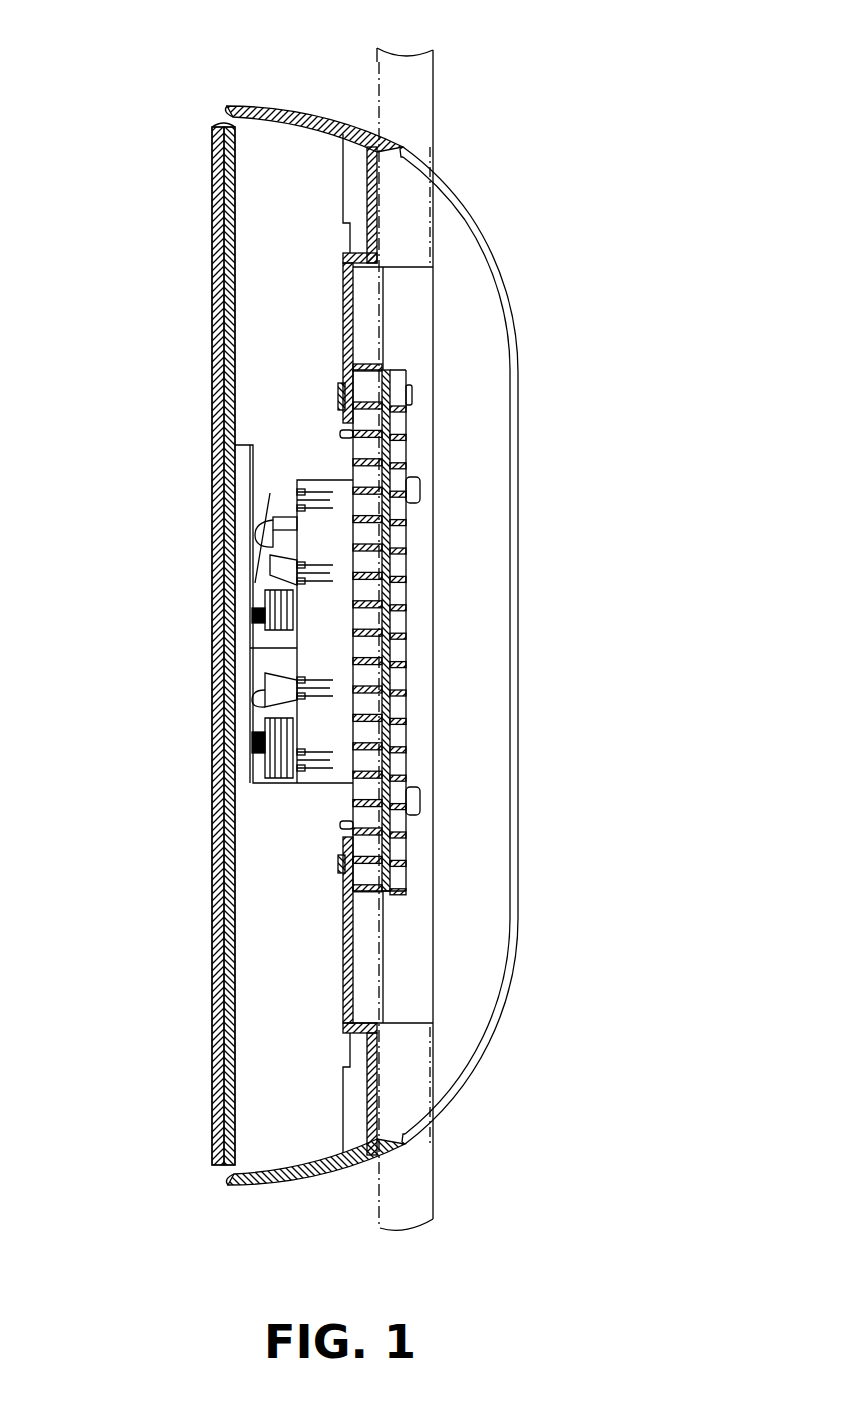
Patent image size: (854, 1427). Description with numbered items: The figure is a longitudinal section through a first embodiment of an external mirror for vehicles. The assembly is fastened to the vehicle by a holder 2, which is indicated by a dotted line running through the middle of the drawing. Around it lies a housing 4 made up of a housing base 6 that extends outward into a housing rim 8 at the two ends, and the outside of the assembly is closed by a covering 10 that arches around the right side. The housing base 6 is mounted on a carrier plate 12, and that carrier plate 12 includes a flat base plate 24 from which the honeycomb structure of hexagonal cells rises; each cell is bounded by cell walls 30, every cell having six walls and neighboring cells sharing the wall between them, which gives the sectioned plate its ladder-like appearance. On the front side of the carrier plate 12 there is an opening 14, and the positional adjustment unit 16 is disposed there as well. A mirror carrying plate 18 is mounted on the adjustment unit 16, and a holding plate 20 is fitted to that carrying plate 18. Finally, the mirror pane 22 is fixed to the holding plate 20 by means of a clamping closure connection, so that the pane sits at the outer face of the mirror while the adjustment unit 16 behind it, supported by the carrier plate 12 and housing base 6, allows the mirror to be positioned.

The holder 2 is at (430, 340).
The housing 4 is at (437, 163).
The housing base 6 is at (343, 300).
The housing rim 8 is at (290, 115).
The covering 10 is at (492, 257).
The carrier plate 12 is at (397, 822).
The opening 14 is at (332, 767).
The positional adjustment unit 16 is at (293, 487).
The mirror carrying plate 18 is at (237, 782).
The holding plate 20 is at (227, 1070).
The mirror pane 22 is at (210, 1008).
The base plate 24 is at (390, 777).
The cell wall 30 is at (406, 587).